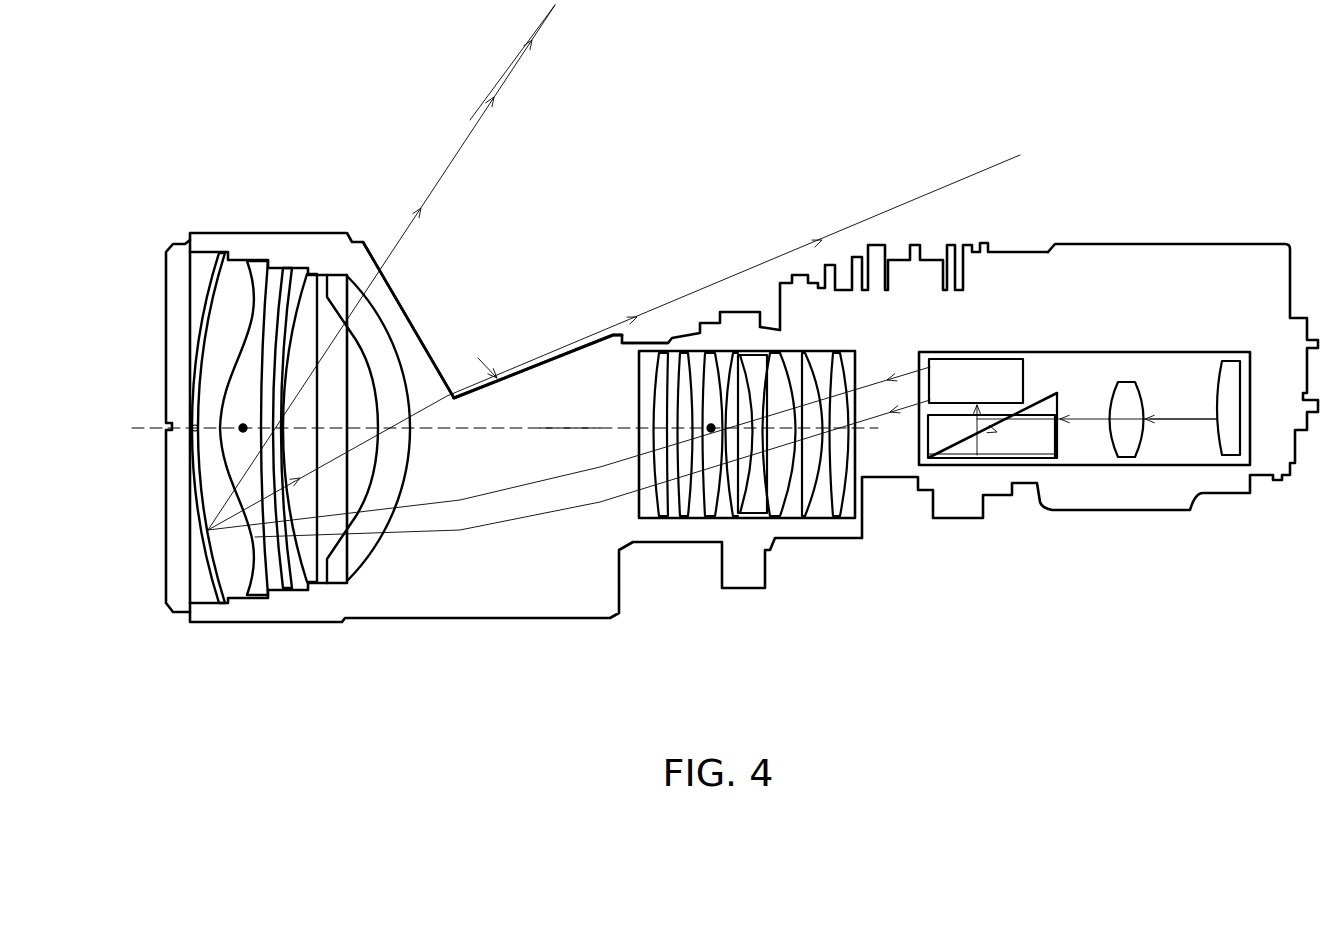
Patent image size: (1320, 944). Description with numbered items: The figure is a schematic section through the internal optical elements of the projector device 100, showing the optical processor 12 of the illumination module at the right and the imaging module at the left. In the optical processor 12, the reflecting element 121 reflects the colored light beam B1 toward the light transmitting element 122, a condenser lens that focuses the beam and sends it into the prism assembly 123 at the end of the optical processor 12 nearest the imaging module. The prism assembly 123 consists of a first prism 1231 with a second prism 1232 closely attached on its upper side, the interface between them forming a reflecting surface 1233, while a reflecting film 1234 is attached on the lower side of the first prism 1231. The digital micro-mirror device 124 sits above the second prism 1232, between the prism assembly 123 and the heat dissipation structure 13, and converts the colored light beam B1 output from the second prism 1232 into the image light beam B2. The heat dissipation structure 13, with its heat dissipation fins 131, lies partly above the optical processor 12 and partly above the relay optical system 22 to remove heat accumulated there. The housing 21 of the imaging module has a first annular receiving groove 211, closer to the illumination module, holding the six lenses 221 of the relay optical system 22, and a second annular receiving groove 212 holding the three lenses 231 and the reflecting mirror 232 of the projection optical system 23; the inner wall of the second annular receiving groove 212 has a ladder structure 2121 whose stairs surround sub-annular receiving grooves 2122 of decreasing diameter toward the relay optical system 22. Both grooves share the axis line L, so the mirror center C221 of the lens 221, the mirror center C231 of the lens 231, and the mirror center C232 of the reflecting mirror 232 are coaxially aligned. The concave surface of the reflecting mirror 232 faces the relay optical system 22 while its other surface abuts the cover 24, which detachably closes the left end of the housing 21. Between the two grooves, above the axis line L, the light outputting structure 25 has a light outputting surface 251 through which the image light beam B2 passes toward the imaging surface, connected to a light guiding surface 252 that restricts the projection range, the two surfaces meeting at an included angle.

The projector device 100 is at (180, 79).
The optical processor 12 is at (878, 630).
The reflecting element 121 is at (1228, 442).
The light transmitting element 122 is at (1130, 440).
The prism assembly 123 is at (1195, 588).
The first prism 1231 is at (1020, 443).
The second prism 1232 is at (947, 435).
The reflecting surface 1233 is at (965, 442).
The reflecting film 1234 is at (1050, 457).
The digital micro-mirror device 124 is at (918, 478).
The heat dissipation structure 13 is at (905, 145).
The heat dissipation fins 131 is at (950, 252).
The housing 21 is at (513, 620).
The first annular receiving groove 211 is at (668, 346).
The second annular receiving groove 212 is at (407, 123).
The ladder structure 2121 is at (349, 258).
The sub-annular receiving grooves 2122 is at (325, 273).
The relay optical system 22 is at (722, 675).
The lens 221 is at (650, 512).
The projection optical system 23 is at (190, 668).
The lens 231 is at (337, 575).
The reflecting mirror 232 is at (227, 605).
The cover 24 is at (175, 568).
The light outputting structure 25 is at (430, 259).
The light outputting surface 251 is at (434, 350).
The light guiding surface 252 is at (537, 362).
The mirror center of the lens of the relay optical system C221 is at (711, 423).
The mirror center of the lens of the projection optical system C231 is at (243, 424).
The mirror center of the reflecting mirror C232 is at (192, 425).
The colored light beam B1 is at (1185, 419).
The image light beam B2 is at (955, 183).
The axis line L is at (567, 428).